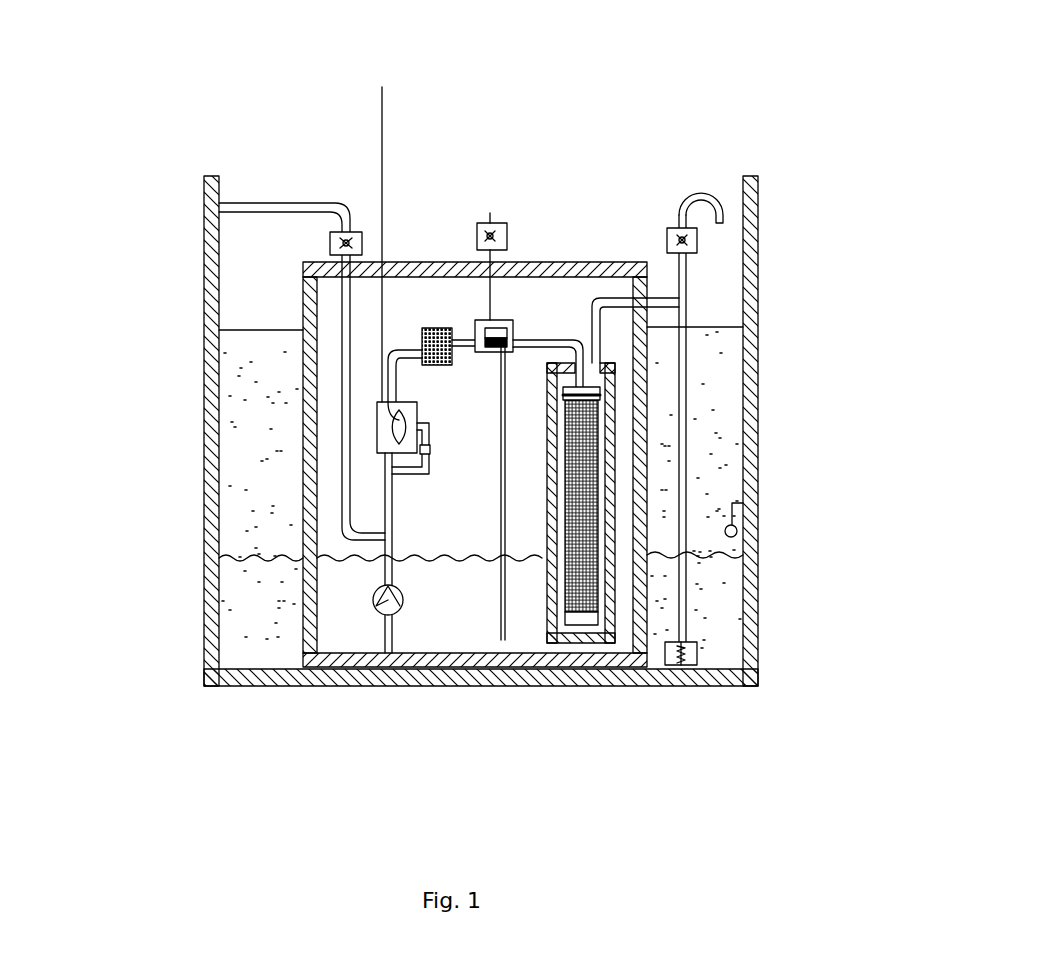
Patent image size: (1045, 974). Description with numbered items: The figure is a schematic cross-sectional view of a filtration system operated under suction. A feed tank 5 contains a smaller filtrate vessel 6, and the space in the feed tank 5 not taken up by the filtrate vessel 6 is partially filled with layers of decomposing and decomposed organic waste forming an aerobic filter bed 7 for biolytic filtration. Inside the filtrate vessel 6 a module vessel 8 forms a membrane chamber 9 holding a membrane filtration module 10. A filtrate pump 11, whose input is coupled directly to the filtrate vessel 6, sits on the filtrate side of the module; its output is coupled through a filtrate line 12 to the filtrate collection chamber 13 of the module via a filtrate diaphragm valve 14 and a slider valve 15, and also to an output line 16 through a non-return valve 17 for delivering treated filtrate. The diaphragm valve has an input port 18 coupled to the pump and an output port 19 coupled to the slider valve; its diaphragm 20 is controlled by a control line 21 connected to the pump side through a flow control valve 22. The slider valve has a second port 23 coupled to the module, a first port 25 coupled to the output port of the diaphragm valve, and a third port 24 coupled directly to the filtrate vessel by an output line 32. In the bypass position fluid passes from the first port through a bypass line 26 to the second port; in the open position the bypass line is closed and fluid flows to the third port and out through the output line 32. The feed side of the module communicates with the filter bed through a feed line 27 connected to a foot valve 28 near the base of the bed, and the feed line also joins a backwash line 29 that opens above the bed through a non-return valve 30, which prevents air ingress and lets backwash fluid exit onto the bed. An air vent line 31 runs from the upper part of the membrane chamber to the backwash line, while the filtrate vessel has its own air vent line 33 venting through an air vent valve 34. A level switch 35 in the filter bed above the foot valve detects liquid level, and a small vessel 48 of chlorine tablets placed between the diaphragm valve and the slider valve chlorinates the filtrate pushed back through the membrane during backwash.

The feed tank 5 is at (544, 457).
The filtrate vessel 6 is at (427, 262).
The aerobic filter bed 7 is at (723, 402).
The module vessel 8 is at (709, 337).
The membrane chamber 9 is at (593, 640).
The membrane filtration module 10 is at (598, 412).
The filtrate pump 11 is at (390, 602).
The filtrate line 12 is at (567, 388).
The filtrate collection chamber 13 is at (582, 385).
The filtrate diaphragm valve 14 is at (382, 87).
The slider valve 15 is at (478, 313).
The output line 16 is at (261, 312).
The non-return valve 17 is at (337, 237).
The input port 18 is at (400, 463).
The output port 19 is at (422, 362).
The diaphragm 20 is at (380, 438).
The control line 21 is at (388, 540).
The flow control valve 22 is at (420, 452).
The second port 23 is at (527, 323).
The third port 24 is at (505, 350).
The first port 25 is at (457, 343).
The bypass line 26 is at (325, 335).
The feed line 27 is at (685, 613).
The foot valve 28 is at (713, 667).
The backwash line 29 is at (779, 403).
The non-return valve 30 is at (675, 245).
The air vent line 31 is at (623, 300).
The output line 32 is at (500, 505).
The air vent line 33 is at (507, 253).
The air vent valve 34 is at (505, 217).
The level switch 35 is at (745, 502).
The vessel containing chlorine tablets 48 is at (383, 402).